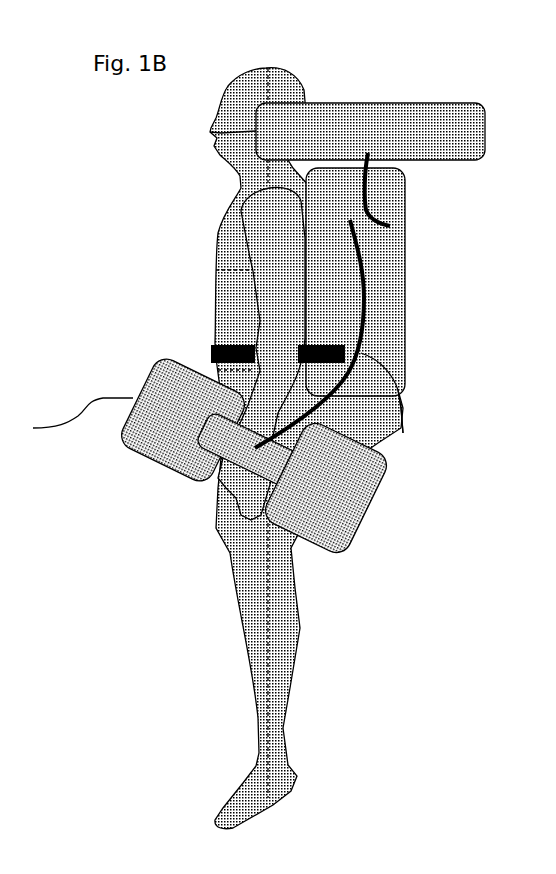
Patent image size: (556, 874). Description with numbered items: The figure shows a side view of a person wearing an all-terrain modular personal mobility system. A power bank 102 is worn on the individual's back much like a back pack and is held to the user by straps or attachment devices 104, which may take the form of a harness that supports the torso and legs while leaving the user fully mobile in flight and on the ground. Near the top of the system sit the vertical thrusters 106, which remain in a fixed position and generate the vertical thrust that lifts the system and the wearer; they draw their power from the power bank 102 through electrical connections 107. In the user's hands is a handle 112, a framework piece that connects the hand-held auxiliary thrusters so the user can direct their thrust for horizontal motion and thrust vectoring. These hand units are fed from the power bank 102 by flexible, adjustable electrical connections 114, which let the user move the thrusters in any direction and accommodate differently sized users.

The power bank 102 is at (388, 313).
The attachment devices 104 is at (203, 342).
The vertical thrusters 106 is at (213, 125).
The electrical connections 107 is at (382, 216).
The handle 112 is at (222, 503).
The electrical connections 114 is at (395, 425).